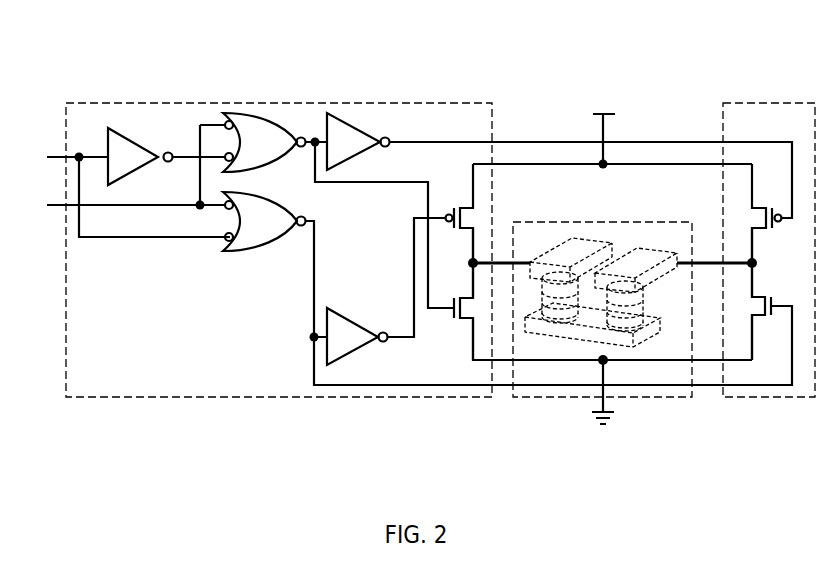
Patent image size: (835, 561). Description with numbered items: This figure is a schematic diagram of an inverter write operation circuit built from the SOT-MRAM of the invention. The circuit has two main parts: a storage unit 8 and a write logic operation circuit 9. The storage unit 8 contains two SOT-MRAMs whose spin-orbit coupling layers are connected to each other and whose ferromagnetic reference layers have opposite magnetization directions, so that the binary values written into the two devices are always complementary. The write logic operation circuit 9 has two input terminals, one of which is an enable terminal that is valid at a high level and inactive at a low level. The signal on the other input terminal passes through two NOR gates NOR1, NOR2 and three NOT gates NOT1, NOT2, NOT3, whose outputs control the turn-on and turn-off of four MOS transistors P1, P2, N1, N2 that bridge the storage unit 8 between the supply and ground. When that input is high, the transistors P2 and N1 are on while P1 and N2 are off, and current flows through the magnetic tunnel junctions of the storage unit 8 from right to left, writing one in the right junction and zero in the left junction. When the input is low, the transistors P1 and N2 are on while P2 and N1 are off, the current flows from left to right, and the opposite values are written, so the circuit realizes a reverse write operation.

The storage unit 8 is at (645, 393).
The write logic operation circuit 9 is at (750, 115).
The NOT gate NOT1 is at (145, 150).
The NOT gate NOT2 is at (372, 141).
The NOT gate NOT3 is at (357, 323).
The NOR gate NOR1 is at (264, 142).
The NOR gate NOR2 is at (264, 221).
The MOS transistor P1 is at (456, 213).
The MOS transistor P2 is at (768, 213).
The MOS transistor N1 is at (455, 311).
The MOS transistor N2 is at (768, 311).